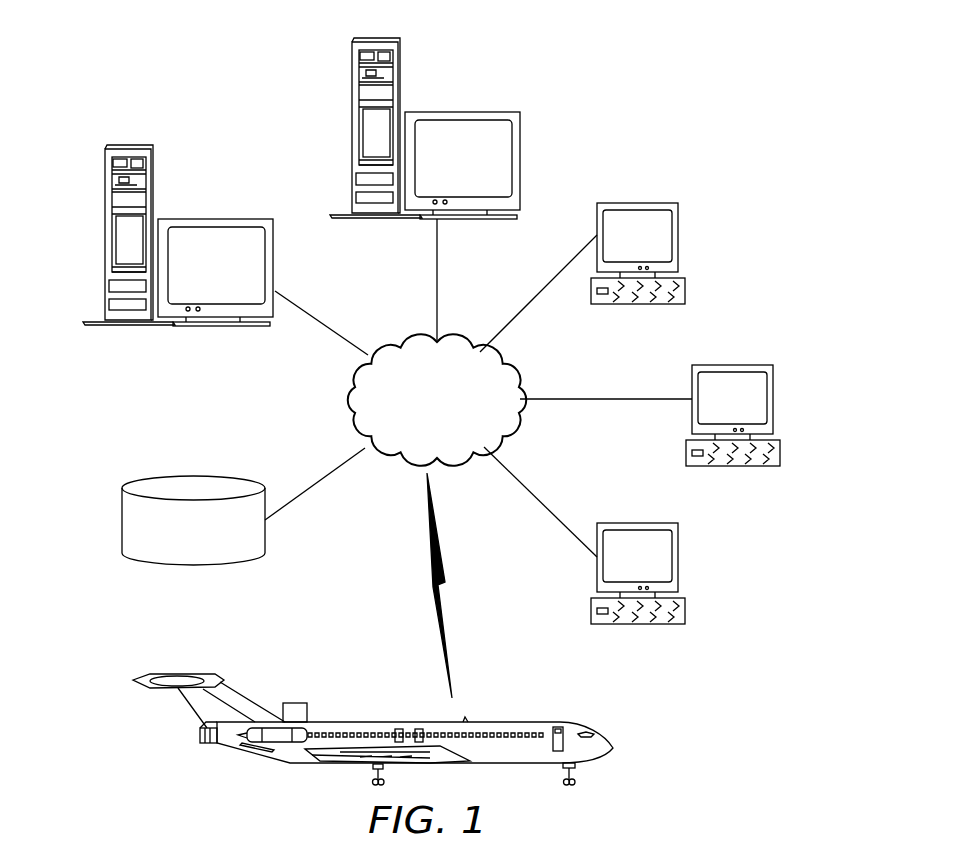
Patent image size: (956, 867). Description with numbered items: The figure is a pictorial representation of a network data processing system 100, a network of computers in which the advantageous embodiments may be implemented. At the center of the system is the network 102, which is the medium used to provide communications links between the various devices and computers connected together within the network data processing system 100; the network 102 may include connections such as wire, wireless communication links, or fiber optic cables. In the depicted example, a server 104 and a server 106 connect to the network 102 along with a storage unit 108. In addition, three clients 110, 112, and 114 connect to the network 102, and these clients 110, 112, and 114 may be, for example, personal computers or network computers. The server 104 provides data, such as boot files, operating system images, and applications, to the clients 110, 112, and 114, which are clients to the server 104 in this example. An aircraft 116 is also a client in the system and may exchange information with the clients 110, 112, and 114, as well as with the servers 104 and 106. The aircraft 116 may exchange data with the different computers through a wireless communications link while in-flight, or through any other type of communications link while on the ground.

The network data processing system 100 is at (612, 70).
The network 102 is at (402, 343).
The server 104 is at (352, 130).
The server 106 is at (105, 232).
The storage unit 108 is at (173, 575).
The client 110 is at (680, 237).
The client 112 is at (773, 397).
The client 114 is at (678, 556).
The aircraft 116 is at (203, 737).